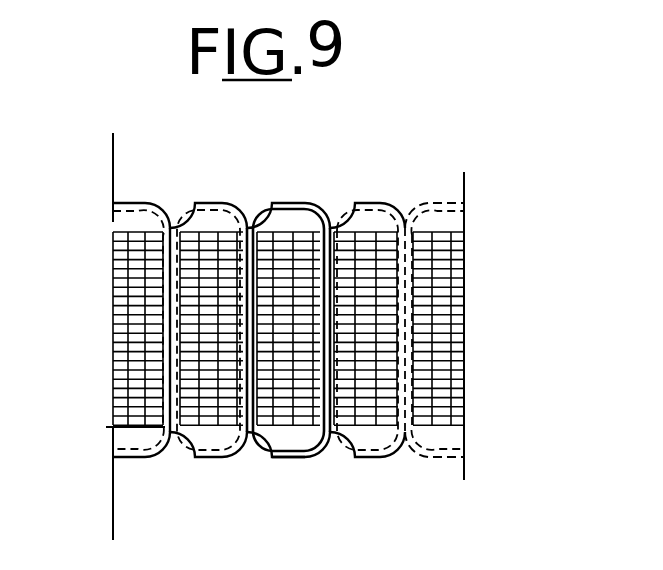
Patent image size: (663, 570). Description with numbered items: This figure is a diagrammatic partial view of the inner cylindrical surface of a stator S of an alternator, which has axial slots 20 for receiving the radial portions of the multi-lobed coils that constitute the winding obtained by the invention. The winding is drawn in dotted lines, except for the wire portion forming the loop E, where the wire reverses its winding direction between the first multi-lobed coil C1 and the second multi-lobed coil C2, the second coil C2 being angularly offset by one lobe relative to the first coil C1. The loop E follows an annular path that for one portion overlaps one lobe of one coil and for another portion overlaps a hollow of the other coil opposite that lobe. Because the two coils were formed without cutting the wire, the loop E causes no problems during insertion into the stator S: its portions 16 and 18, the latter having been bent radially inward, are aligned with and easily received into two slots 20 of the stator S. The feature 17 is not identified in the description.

The portion of loop 16 is at (320, 367).
The electrode outline 17 is at (286, 454).
The radially inward bent portion 18 is at (247, 267).
The axial slots 20 is at (168, 446).
The loop E is at (297, 195).
The first multi-lobed coil C1 is at (376, 190).
The second multi-lobed coil C2 is at (352, 460).
The stator S is at (445, 328).